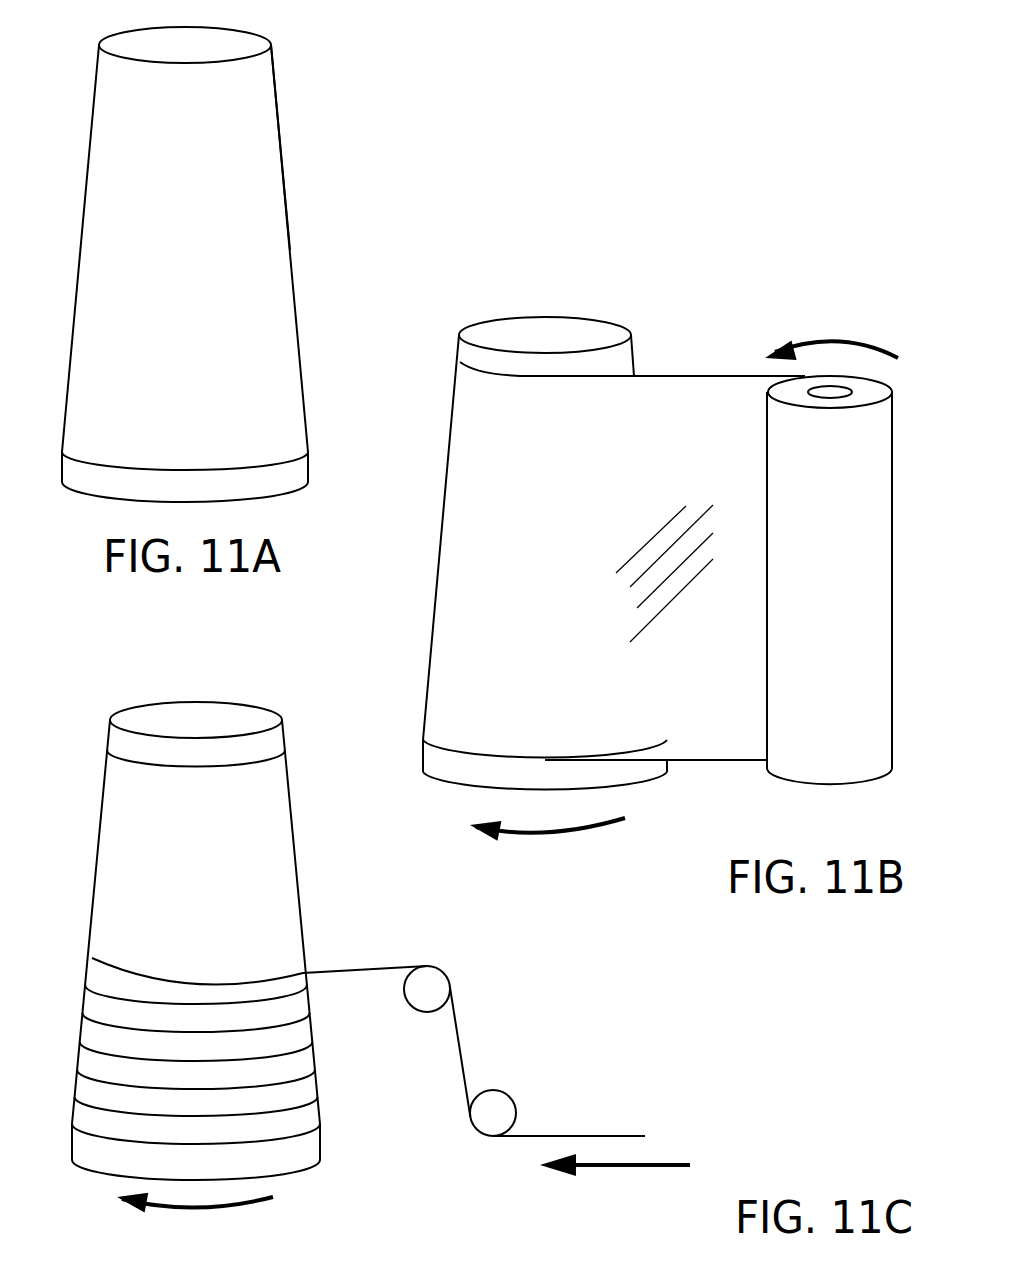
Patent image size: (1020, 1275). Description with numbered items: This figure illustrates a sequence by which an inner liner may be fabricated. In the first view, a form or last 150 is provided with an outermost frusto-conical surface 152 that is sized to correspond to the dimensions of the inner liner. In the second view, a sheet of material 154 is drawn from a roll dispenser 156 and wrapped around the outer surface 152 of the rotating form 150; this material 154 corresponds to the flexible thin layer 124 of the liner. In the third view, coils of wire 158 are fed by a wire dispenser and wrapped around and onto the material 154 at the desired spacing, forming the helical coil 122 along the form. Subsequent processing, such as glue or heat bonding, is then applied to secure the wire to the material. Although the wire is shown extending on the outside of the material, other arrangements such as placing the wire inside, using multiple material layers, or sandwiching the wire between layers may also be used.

In FIG. 11A, the form (last) 150 is at (412, 73).
In FIG. 11B, the form (last) 150 is at (747, 246).
In FIG. 11C, the form (last) 150 is at (137, 672).
In FIG. 11A, the outermost frusto-conical surface 152 is at (258, 162).
In FIG. 11B, the outermost frusto-conical surface 152 is at (618, 355).
In FIG. 11C, the outermost frusto-conical surface 152 is at (275, 738).
In FIG. 11B, the sheet of material 154 is at (713, 400).
In FIG. 11B, the roll dispenser 156 is at (867, 522).
In FIG. 11C, the flexible thin layer 124 is at (275, 830).
In FIG. 11C, the helical coil 122 is at (302, 1100).
In FIG. 11C, the coils of wire 158 is at (582, 1137).